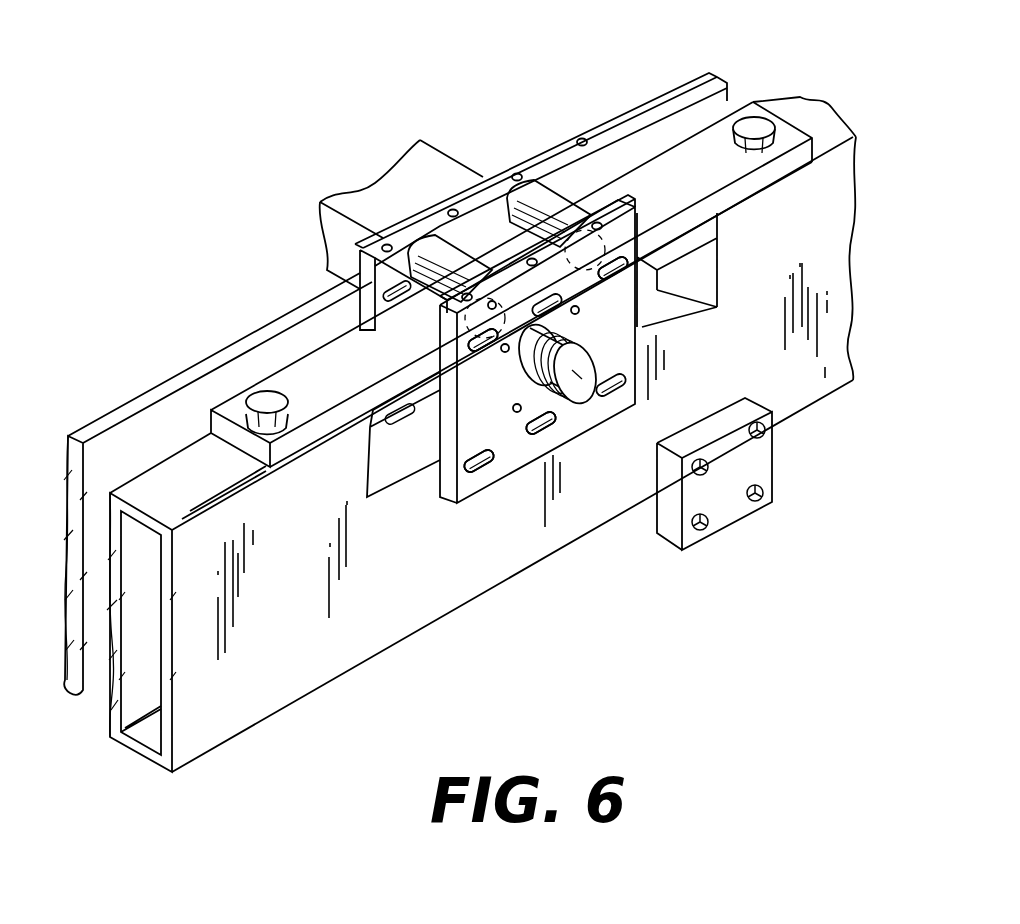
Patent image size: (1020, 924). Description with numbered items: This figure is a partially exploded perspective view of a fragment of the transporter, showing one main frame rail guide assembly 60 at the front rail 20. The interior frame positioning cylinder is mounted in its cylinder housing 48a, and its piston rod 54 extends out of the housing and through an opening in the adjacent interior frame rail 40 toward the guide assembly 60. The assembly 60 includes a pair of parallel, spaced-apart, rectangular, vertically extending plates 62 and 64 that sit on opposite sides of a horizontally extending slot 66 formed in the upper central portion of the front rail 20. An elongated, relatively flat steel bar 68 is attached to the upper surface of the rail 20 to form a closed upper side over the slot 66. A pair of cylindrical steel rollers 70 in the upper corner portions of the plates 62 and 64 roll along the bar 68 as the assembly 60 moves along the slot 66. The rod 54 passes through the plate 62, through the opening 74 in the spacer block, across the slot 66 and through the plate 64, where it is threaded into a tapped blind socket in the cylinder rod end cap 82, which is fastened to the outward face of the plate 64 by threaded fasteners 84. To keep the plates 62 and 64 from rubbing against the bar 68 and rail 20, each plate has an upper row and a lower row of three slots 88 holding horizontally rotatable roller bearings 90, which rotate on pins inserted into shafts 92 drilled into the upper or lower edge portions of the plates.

The front rail 20 is at (847, 197).
The interior frame rail 40 is at (97, 672).
The cylinder housing 48a is at (380, 193).
The piston rod 54 is at (592, 363).
The main frame rail guide assembly 60 is at (545, 145).
The plate 62 is at (470, 200).
The plate 64 is at (637, 212).
The slot 66 is at (688, 240).
The steel bar 68 is at (717, 143).
The roller 70 is at (425, 257).
The opening 74 is at (355, 274).
The cylinder rod end cap 82 is at (753, 467).
The threaded fasteners 84 is at (763, 430).
The slots 88 is at (615, 273).
The roller bearings 90 is at (487, 352).
The shafts 92 is at (560, 222).